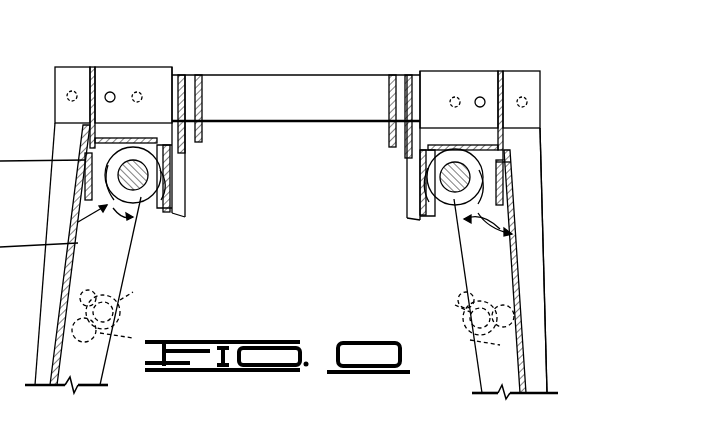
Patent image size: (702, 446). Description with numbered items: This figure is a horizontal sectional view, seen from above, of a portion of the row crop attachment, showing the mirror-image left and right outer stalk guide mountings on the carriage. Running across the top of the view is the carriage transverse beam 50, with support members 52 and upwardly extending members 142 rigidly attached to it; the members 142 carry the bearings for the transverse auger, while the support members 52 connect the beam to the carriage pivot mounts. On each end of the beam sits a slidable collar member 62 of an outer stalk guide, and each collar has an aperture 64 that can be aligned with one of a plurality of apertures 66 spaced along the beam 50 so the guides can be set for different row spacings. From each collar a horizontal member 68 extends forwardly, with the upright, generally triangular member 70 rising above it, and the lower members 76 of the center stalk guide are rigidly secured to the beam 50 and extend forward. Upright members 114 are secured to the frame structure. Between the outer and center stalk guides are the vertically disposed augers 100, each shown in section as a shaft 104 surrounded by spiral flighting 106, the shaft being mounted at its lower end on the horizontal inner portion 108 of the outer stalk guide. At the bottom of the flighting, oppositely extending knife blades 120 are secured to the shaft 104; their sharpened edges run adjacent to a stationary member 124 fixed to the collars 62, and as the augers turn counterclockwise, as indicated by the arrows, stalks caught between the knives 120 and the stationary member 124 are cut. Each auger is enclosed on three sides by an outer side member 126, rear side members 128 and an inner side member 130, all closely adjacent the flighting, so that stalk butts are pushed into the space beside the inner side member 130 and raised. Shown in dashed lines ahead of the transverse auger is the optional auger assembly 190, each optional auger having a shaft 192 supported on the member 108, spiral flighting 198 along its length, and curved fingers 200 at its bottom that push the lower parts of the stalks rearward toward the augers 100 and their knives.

The carriage transverse beam 50 is at (297, 82).
The support members 52 is at (186, 128).
The slidable collar member 62 is at (123, 70).
The aperture 64 is at (112, 91).
The apertures 66 is at (68, 91).
The horizontal member 68 is at (528, 210).
The upright member 70 is at (547, 258).
The lower members 76 is at (175, 188).
The vertically disposed augers 100 is at (77, 223).
The shaft 104 is at (138, 191).
The spiral flighting 106 is at (117, 148).
The horizontal inner portion 108 is at (120, 243).
The upright members 114 is at (92, 130).
The knife blades 120 is at (107, 188).
The stationary member 124 is at (155, 206).
The outer side member 126 is at (508, 170).
The rear side members 128 is at (147, 140).
The inner side member 130 is at (169, 167).
The upwardly extending members 142 is at (202, 137).
The optional auger assembly 190 is at (82, 334).
The shaft 192 is at (100, 308).
The spiral flighting 198 is at (92, 322).
The fingers 200 is at (133, 290).